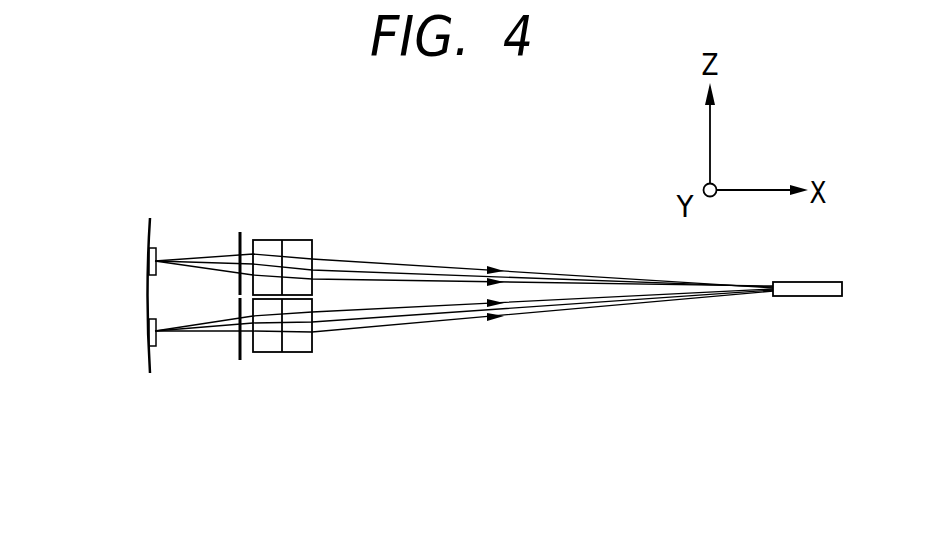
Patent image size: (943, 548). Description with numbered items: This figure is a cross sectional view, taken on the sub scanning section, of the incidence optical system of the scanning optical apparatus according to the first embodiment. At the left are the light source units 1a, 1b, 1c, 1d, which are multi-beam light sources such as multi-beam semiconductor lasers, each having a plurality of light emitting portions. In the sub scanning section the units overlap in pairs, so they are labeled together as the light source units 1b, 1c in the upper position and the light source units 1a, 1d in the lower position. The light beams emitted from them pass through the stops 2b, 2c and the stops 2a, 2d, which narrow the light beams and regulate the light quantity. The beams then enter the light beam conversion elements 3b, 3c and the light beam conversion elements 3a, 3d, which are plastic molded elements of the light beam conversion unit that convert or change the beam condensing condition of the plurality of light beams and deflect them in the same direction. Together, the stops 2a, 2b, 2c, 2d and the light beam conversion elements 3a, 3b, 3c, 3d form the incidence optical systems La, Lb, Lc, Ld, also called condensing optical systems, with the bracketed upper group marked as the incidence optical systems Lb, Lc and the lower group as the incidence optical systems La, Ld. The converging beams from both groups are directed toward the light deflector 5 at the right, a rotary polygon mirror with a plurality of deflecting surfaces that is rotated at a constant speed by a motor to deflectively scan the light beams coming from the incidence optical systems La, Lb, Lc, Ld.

The light source unit 1a is at (105, 329).
The light source unit 1b is at (105, 257).
The light source unit 1c is at (149, 261).
The light source unit 1d is at (149, 332).
The stop 2a is at (215, 358).
The stop 2b is at (215, 233).
The stop 2c is at (240, 233).
The stop 2d is at (240, 359).
The light beam conversion element 3a is at (298, 359).
The light beam conversion element 3b is at (298, 233).
The light beam conversion element 3c is at (277, 239).
The light beam conversion element 3d is at (275, 353).
The light deflector 5 is at (797, 297).
The incidence optical system La is at (464, 383).
The incidence optical system Lb is at (464, 200).
The incidence optical system Lc is at (464, 200).
The incidence optical system Ld is at (464, 383).